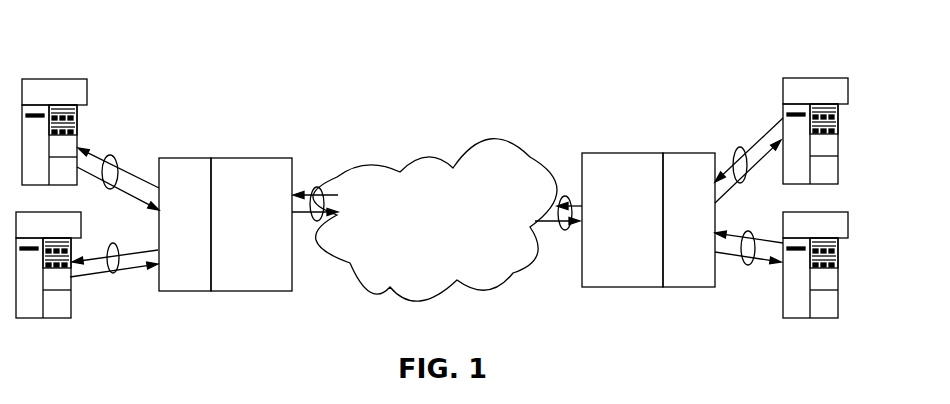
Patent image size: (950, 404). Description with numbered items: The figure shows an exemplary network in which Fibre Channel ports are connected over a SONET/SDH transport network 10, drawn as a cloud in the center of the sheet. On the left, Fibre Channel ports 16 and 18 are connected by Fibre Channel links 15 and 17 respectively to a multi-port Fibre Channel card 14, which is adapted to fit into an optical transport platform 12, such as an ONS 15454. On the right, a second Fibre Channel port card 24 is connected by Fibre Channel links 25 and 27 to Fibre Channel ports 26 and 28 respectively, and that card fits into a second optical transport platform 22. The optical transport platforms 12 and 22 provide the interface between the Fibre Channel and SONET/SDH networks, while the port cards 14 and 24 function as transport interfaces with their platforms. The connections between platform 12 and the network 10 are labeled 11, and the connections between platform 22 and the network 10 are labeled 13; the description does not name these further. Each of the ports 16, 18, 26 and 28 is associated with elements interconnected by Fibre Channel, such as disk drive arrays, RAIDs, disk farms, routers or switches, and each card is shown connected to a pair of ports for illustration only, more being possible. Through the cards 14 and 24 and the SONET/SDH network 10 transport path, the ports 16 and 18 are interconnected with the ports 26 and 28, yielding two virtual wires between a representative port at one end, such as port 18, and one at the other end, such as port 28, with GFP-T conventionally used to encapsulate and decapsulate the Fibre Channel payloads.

The SONET/SDH transport network 10 is at (450, 166).
The optical link 11 is at (318, 190).
The optical transport platform 12 is at (247, 157).
The optical link 13 is at (572, 230).
The multi-port Fibre Channel card 14 is at (181, 157).
The Fibre Channel link 15 is at (115, 272).
The Fibre Channel port 16 is at (95, 309).
The Fibre Channel link 17 is at (117, 158).
The Fibre Channel port 18 is at (104, 69).
The optical transport platform 22 is at (622, 153).
The Fibre Channel port card 24 is at (687, 153).
The Fibre Channel link 25 is at (752, 264).
The Fibre Channel port 26 is at (760, 305).
The Fibre Channel link 27 is at (738, 147).
The Fibre Channel port 28 is at (782, 59).